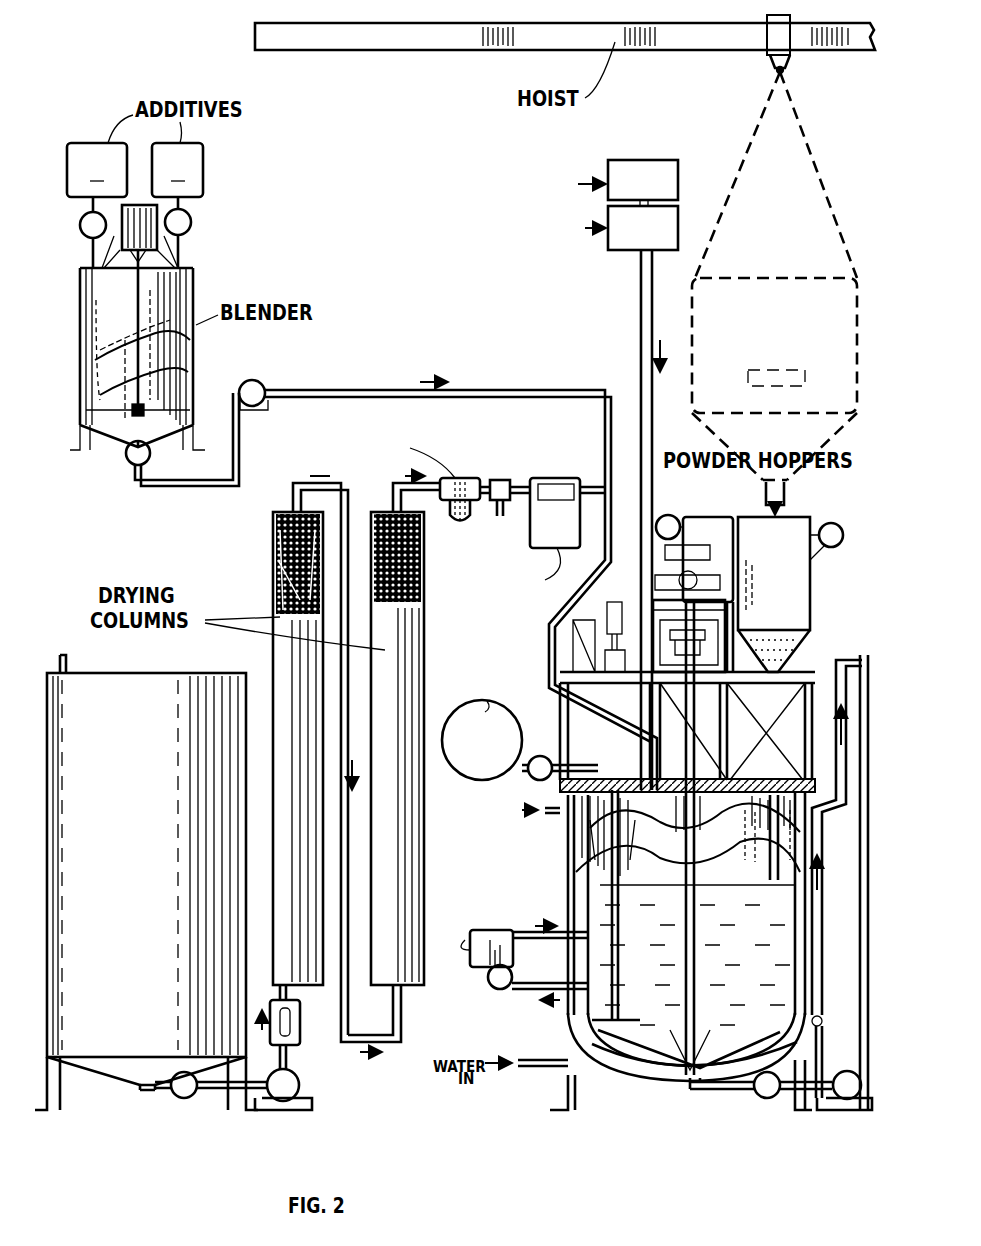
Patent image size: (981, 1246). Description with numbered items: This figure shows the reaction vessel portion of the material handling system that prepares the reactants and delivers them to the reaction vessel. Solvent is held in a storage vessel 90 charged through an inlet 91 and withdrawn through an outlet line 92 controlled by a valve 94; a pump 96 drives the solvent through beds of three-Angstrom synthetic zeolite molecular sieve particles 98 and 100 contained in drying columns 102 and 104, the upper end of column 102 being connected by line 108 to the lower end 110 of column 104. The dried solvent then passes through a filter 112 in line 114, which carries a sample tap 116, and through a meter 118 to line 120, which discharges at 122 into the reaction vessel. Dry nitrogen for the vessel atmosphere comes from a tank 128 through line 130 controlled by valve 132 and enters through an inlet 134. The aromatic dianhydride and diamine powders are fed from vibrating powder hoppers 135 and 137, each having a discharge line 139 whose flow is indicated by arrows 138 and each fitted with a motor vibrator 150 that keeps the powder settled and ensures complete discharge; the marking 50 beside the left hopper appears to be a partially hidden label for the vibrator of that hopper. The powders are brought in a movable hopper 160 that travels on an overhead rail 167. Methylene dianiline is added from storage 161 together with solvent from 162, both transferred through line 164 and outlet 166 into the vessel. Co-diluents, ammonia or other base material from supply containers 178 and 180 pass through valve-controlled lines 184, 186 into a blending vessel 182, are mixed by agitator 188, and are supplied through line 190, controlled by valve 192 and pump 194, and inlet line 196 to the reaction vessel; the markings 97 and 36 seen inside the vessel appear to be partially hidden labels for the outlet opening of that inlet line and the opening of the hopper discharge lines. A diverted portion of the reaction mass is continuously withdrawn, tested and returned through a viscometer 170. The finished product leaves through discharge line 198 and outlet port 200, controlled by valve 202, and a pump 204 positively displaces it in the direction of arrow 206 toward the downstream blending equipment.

The overhead rail 167 is at (470, 45).
The movable hopper 160 is at (805, 190).
The MDA storage 161 is at (653, 160).
The solvent supply 162 is at (612, 245).
The line 164 is at (641, 332).
The supply container 178 is at (82, 150).
The supply container 180 is at (205, 162).
The valve controlled line 184 is at (192, 225).
The valve controlled line 186 is at (80, 233).
The blending vessel 182 is at (196, 300).
The agitator 188 is at (80, 393).
The valve 192 is at (127, 458).
The line 190 is at (185, 492).
The pump 194 is at (252, 380).
The inlet line 196 is at (612, 392).
The line 108 is at (293, 485).
The molecular sieve particles 98 is at (273, 532).
The column 102 is at (276, 578).
The molecular sieve particles 100 is at (406, 566).
The column 104 is at (425, 630).
The lower end of column 110 is at (401, 993).
The filter 112 is at (470, 478).
The sample tap 116 is at (508, 478).
The line 114 is at (502, 508).
The meter 118 is at (560, 470).
The line 120 is at (578, 600).
The storage vessel 90 is at (108, 1062).
The inlet 91 is at (68, 663).
The outlet line 92 is at (158, 1095).
The valve 94 is at (190, 1098).
The pump 96 is at (300, 1092).
The nitrogen tank 128 is at (470, 772).
The line 130 is at (508, 795).
The valve 132 is at (538, 782).
The inlet 134 is at (560, 815).
The discharge point 122 is at (572, 860).
The arrows 138 is at (722, 875).
The outlet 166 is at (682, 900).
The stirrer 97 is at (632, 866).
The cooling coil 36 is at (738, 838).
The viscometer 170 is at (565, 995).
The outlet port 200 is at (690, 1080).
The discharge line 198 is at (700, 1092).
The valve 202 is at (765, 1072).
The pump 204 is at (843, 1072).
The arrow 206 is at (798, 800).
The discharge line 139 is at (790, 690).
The vibrating powder hopper 137 is at (733, 557).
The valve 50 is at (680, 508).
The motor vibrator 150 is at (830, 524).
The vibrating powder hopper 135 is at (810, 618).